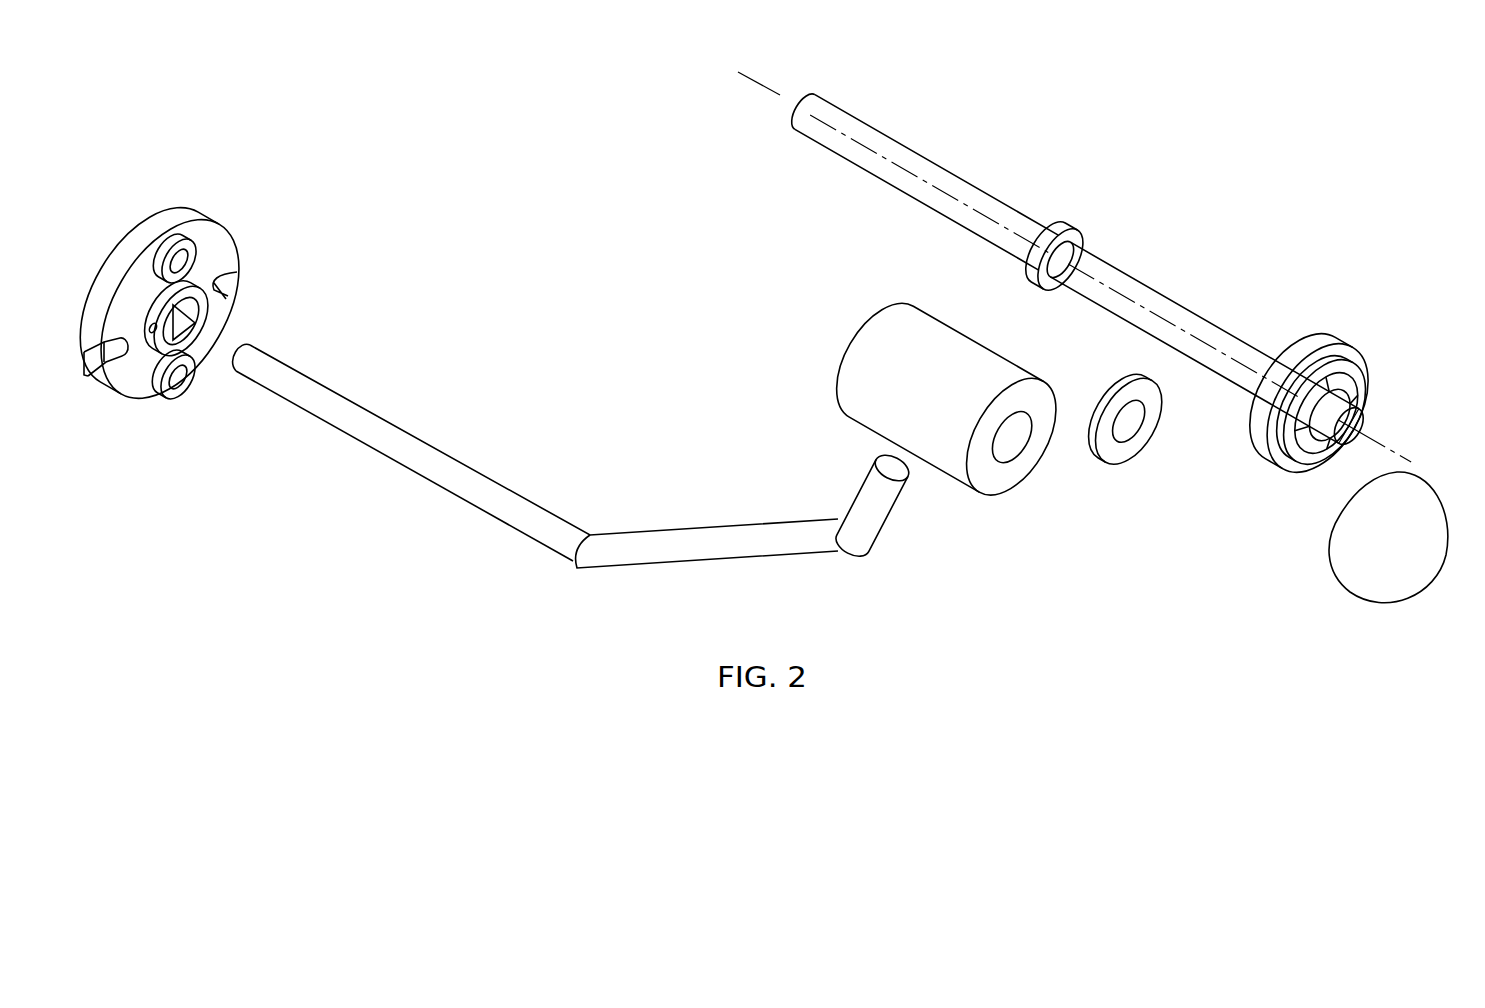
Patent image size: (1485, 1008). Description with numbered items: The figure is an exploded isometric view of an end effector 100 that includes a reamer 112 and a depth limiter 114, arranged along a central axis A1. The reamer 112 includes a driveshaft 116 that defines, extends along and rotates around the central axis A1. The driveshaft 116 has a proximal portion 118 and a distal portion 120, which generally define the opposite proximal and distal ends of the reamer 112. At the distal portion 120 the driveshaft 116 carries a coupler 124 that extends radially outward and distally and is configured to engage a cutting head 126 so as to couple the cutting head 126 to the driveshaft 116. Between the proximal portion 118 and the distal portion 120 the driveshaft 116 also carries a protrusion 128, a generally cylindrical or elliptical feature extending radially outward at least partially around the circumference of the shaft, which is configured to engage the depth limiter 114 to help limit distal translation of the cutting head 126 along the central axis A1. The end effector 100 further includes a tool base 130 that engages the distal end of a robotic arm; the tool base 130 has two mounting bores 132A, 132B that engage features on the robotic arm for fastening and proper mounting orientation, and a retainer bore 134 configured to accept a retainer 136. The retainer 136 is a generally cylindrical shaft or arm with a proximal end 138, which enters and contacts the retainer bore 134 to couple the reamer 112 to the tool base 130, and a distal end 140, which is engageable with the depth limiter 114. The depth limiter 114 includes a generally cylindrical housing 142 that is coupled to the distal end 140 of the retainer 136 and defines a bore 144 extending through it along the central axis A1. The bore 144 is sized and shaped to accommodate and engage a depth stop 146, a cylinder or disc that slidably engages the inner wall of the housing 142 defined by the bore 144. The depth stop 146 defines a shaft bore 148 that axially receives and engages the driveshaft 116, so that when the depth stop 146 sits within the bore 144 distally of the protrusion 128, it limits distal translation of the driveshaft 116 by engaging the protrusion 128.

The end effector 100 is at (1180, 131).
The reamer 112 is at (798, 72).
The central axis A1 is at (762, 89).
The depth limiter 114 is at (840, 333).
The driveshaft 116 is at (977, 172).
The proximal portion 118 is at (856, 120).
The distal portion 120 is at (1170, 300).
The coupler 124 is at (1343, 342).
The cutting head 126 is at (1418, 560).
The protrusion 128 is at (1074, 231).
The tool base 130 is at (216, 222).
The mounting bore 132A is at (181, 260).
The mounting bore 132B is at (179, 380).
The retainer bore 134 is at (188, 320).
The retainer 136 is at (395, 422).
The proximal end 138 is at (280, 360).
The distal end 140 is at (886, 514).
The housing 142 is at (868, 432).
The bore 144 is at (1010, 437).
The depth stop 146 is at (1122, 376).
The shaft bore 148 is at (1127, 417).